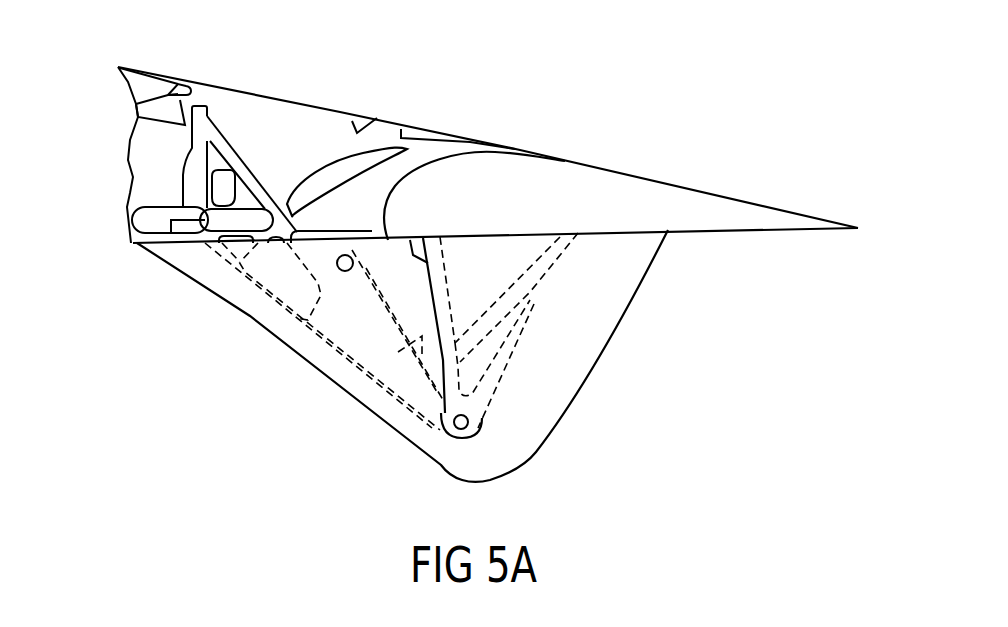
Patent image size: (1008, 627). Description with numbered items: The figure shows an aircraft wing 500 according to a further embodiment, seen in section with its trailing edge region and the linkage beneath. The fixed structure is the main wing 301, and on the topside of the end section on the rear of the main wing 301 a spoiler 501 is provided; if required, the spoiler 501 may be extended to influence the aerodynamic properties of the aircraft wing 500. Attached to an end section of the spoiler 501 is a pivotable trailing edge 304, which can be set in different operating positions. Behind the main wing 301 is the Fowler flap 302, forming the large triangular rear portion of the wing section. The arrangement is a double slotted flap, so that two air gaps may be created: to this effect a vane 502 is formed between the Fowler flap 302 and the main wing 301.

The aircraft wing 500 is at (788, 95).
The main wing 301 is at (162, 165).
The Fowler flap 302 is at (653, 193).
The pivotable trailing edge 304 is at (473, 134).
The spoiler 501 is at (412, 129).
The vane 502 is at (322, 185).